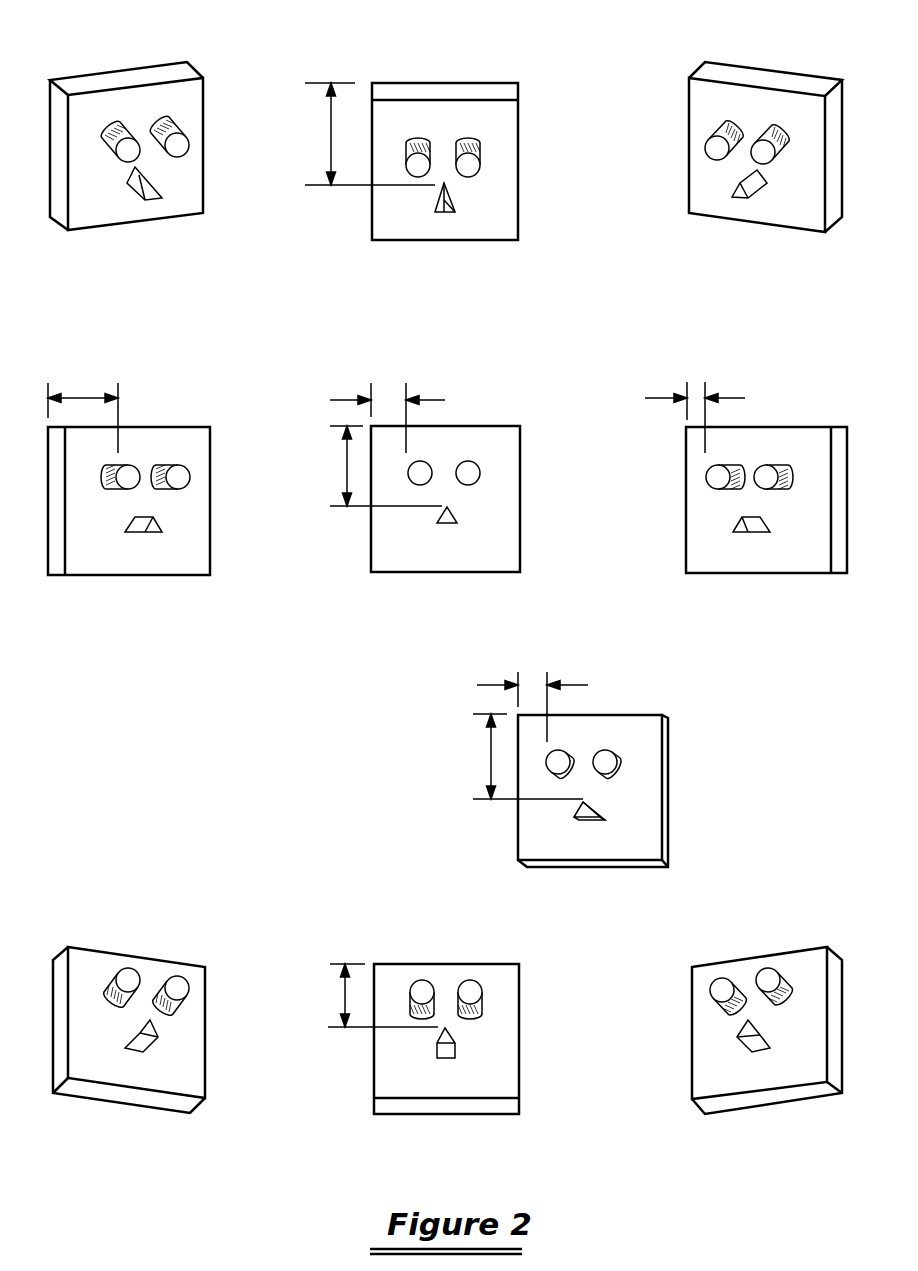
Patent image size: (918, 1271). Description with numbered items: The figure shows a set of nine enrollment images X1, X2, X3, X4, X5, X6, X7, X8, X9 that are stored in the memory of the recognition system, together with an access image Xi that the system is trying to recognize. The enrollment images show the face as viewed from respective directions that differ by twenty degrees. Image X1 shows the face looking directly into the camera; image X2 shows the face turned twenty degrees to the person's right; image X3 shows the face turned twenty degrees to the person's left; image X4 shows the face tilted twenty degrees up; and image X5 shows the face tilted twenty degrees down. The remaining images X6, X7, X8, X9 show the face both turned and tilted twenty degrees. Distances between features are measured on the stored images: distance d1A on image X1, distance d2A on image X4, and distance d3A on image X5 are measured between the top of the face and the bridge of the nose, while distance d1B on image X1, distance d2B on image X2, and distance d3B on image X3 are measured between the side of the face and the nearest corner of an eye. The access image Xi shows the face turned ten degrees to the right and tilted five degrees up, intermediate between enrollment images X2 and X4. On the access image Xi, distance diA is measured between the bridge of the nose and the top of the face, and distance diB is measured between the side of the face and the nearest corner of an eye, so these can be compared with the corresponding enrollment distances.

The enrollment image X1 is at (477, 425).
The enrollment image X2 is at (787, 427).
The enrollment image X3 is at (200, 427).
The enrollment image X4 is at (447, 963).
The enrollment image X5 is at (497, 83).
The enrollment image X6 is at (805, 73).
The enrollment image X7 is at (788, 947).
The enrollment image X8 is at (183, 962).
The enrollment image X9 is at (165, 63).
The access image Xi is at (620, 713).
The distance d1A is at (371, 466).
The distance d1B is at (367, 415).
The distance d2A is at (365, 995).
The distance d2B is at (675, 415).
The distance d3A is at (370, 134).
The distance d3B is at (82, 393).
The distance diA is at (513, 756).
The distance diB is at (510, 704).